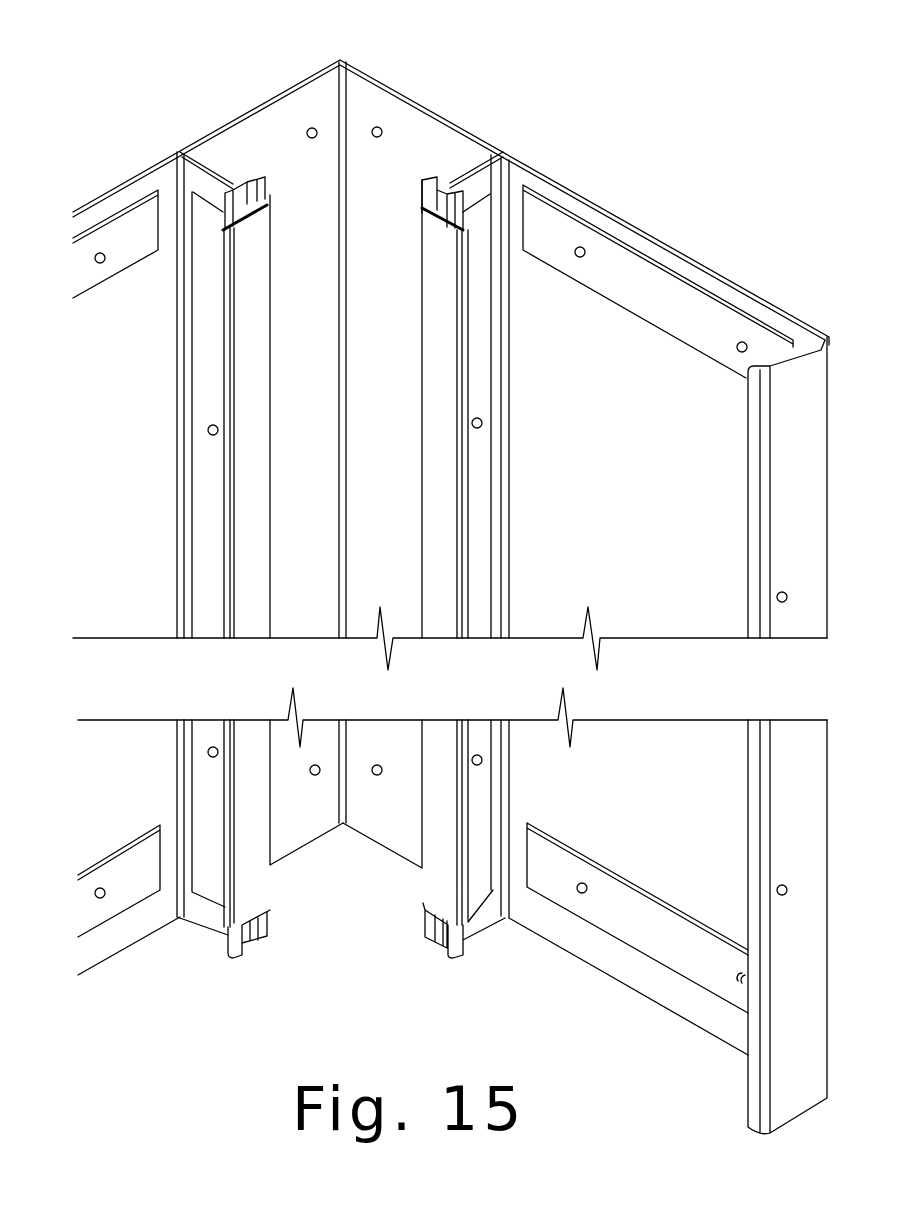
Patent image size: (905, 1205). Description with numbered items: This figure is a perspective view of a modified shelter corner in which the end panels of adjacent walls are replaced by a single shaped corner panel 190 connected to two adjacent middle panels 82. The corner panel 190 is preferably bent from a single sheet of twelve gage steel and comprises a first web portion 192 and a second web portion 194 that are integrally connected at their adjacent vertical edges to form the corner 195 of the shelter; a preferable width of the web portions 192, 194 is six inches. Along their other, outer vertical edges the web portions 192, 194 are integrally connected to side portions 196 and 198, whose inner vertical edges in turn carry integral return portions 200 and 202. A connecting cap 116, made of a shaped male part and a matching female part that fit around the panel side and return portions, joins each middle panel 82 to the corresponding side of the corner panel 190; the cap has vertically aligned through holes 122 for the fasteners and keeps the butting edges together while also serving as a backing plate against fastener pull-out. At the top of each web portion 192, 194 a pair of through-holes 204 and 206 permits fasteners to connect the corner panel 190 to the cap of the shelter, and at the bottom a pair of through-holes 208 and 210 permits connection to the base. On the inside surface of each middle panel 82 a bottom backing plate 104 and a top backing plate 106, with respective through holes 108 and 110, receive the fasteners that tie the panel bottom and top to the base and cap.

The middle panel 82 is at (82, 197).
The bottom backing plate 104 is at (132, 837).
The top backing plate 106 is at (129, 274).
The through holes 108 is at (99, 899).
The through holes 110 is at (98, 252).
The connecting cap 116 is at (236, 514).
The vertically aligned through holes 122 is at (207, 436).
The corner panel 190 is at (402, 80).
The first web portion 192 is at (417, 432).
The second web portion 194 is at (333, 432).
The corner 195 is at (338, 58).
The side portion 196 is at (463, 168).
The side portion 198 is at (220, 163).
The return portion 200 is at (262, 200).
The return portion 202 is at (427, 192).
The through-holes 204 is at (374, 127).
The through-holes 206 is at (309, 128).
The through-holes 208 is at (374, 775).
The through-holes 210 is at (312, 775).